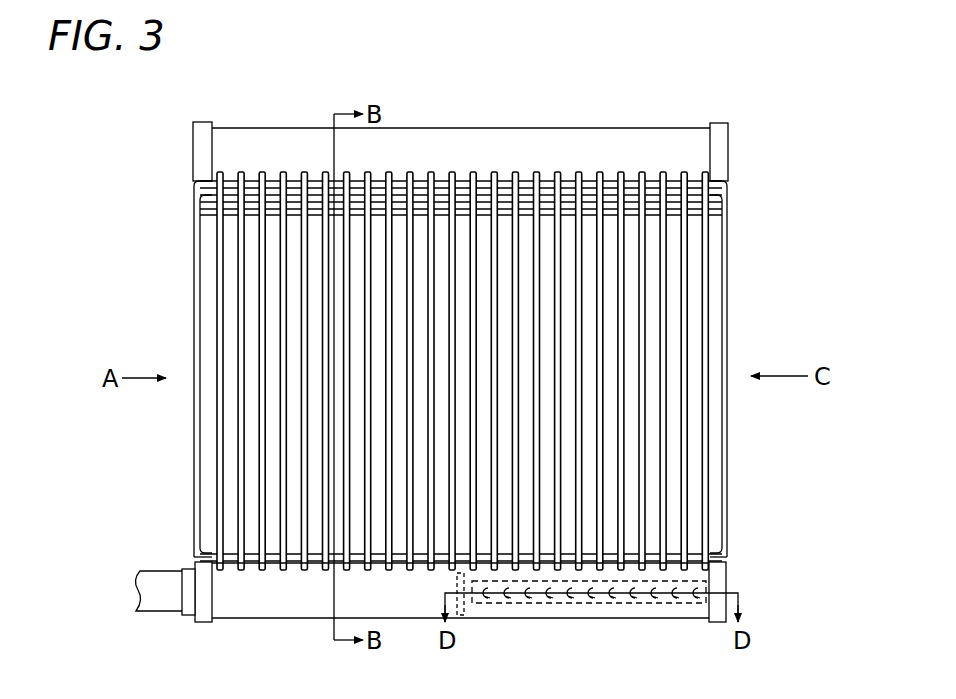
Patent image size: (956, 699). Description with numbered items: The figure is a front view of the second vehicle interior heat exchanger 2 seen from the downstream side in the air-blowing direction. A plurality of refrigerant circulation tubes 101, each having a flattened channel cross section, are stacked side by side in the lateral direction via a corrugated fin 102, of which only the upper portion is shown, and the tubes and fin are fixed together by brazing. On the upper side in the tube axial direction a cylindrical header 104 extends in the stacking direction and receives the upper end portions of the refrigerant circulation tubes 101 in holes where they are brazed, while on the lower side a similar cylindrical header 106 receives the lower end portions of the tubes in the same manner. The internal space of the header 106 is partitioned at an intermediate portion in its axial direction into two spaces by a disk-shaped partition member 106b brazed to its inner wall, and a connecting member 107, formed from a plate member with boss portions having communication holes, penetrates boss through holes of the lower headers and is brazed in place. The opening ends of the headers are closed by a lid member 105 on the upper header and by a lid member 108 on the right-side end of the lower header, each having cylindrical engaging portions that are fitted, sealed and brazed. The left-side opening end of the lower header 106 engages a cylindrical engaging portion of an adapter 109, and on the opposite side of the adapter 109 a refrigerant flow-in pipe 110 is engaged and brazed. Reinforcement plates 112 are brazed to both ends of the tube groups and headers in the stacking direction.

The second vehicle interior heat exchanger 2 is at (624, 98).
The refrigerant circulation tube 101 is at (219, 272).
The corrugated fin 102 is at (196, 190).
The header 104 is at (506, 128).
The lid member 105 is at (196, 140).
The header 106 is at (530, 620).
The partition member 106b is at (463, 612).
The connecting member 107 is at (590, 603).
The lid member 108 is at (728, 578).
The adapter 109 is at (192, 612).
The refrigerant flow-in pipe 110 is at (150, 571).
The reinforcement plate 112 is at (194, 342).